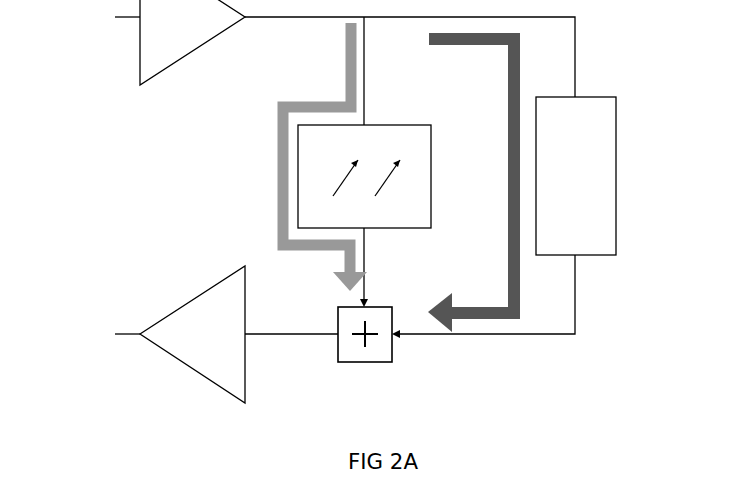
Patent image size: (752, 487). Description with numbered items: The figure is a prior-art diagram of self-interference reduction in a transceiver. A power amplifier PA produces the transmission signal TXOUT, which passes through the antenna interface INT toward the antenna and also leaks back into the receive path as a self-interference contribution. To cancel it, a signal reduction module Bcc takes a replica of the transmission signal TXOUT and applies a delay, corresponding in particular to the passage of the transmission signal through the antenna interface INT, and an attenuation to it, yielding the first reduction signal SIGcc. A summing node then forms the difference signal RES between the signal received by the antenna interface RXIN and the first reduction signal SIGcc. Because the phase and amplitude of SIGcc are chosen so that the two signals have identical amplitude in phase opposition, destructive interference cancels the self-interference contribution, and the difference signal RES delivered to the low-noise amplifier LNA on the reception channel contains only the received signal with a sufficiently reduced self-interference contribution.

The power amplifier PA is at (180, 42).
The low noise amplifier LNA is at (180, 334).
The signal reduction module Bcc is at (428, 110).
The first reduction signal SIGcc is at (389, 267).
The difference signal RES is at (318, 341).
The antenna interface INT is at (576, 176).
The transmission signal TXOUT is at (443, 48).
The signal received by the antenna interface RXIN is at (508, 296).